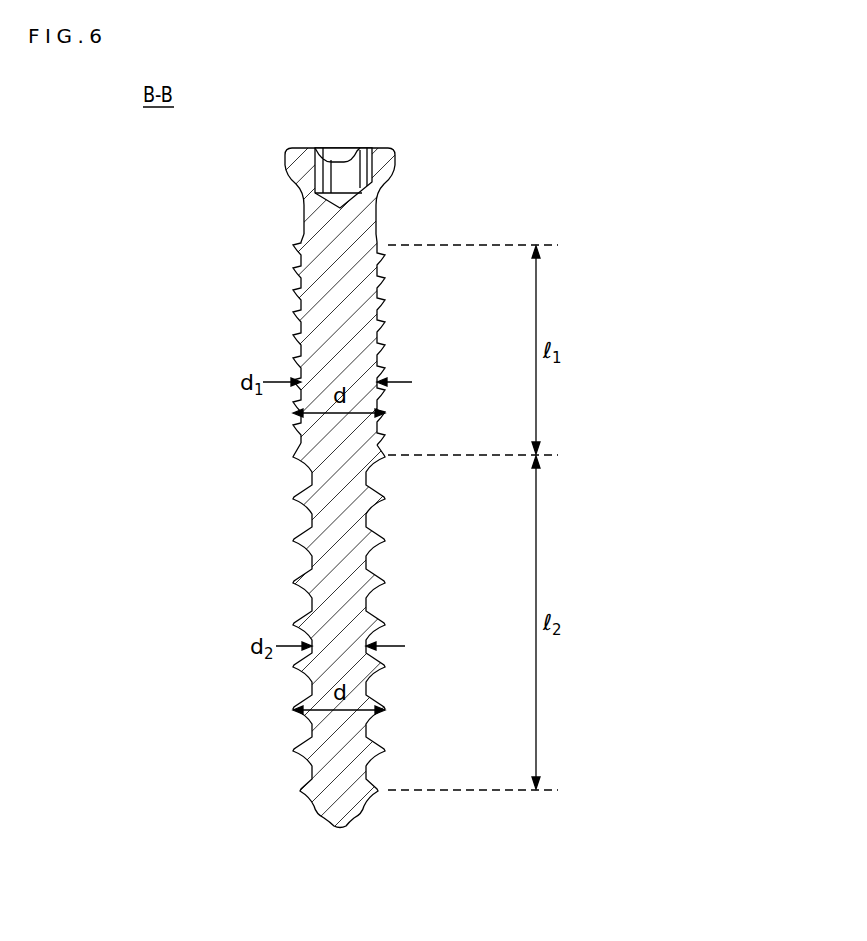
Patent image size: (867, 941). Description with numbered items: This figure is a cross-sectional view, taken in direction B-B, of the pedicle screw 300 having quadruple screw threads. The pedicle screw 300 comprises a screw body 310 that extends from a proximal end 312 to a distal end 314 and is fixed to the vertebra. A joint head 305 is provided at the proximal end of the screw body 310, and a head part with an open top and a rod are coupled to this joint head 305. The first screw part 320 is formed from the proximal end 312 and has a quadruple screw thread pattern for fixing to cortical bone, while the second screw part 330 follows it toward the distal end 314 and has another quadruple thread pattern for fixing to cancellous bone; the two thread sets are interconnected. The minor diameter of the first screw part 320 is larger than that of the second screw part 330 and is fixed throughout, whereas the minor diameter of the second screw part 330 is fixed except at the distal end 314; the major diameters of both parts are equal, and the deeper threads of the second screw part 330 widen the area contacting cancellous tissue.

The pedicle screw 300 is at (433, 470).
The joint head 305 is at (409, 142).
The screw body 310 is at (408, 547).
The proximal end 312 is at (262, 265).
The distal end 314 is at (302, 835).
The first screw part 320 is at (336, 344).
The second screw part 330 is at (455, 455).